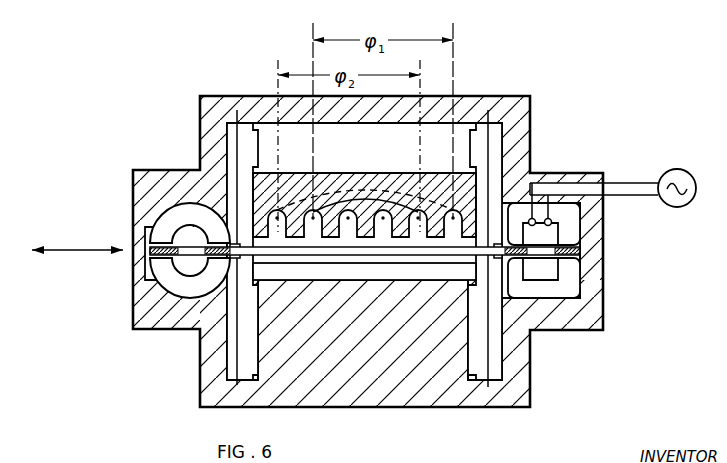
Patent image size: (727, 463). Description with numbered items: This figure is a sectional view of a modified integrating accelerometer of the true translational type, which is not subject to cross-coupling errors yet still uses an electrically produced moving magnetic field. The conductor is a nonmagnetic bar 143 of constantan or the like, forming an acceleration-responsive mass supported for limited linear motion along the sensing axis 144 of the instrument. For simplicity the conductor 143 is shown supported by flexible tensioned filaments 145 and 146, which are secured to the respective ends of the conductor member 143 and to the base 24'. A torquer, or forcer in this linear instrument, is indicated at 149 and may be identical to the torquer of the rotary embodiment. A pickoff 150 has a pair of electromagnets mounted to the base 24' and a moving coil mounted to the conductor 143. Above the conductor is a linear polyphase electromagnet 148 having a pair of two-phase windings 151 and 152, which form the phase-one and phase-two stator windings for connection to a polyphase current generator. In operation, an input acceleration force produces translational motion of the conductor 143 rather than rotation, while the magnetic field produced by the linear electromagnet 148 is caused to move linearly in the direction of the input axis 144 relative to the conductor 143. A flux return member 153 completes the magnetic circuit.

The base 24' is at (368, 251).
The nonmagnetic bar 143 is at (326, 256).
The sensing axis 144 is at (80, 249).
The flexible tensioned filament 145 is at (237, 152).
The flexible tensioned filament 146 is at (490, 134).
The linear polyphase electromagnet 148 is at (340, 180).
The torquer 149 is at (160, 206).
The pickoff 150 is at (582, 232).
The two-phase winding 151 is at (419, 212).
The two-phase winding 152 is at (402, 190).
The flux return member 153 is at (362, 278).